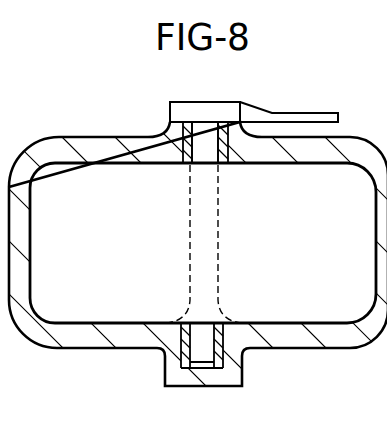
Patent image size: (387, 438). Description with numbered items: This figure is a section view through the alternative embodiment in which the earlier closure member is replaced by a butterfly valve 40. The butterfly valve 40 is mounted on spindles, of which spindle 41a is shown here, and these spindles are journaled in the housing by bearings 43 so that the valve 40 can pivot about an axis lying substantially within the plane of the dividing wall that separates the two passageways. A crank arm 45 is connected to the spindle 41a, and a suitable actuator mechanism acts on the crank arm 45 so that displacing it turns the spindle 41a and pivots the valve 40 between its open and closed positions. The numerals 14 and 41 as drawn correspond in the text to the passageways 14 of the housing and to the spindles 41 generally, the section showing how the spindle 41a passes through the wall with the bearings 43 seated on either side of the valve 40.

The fastener bolt 14 is at (206, 137).
The butterfly valve 40 is at (50, 307).
The tubular sleeve 41 is at (207, 352).
The spindle 41a is at (210, 152).
The bearings 43 is at (183, 133).
The crank arm 45 is at (312, 113).